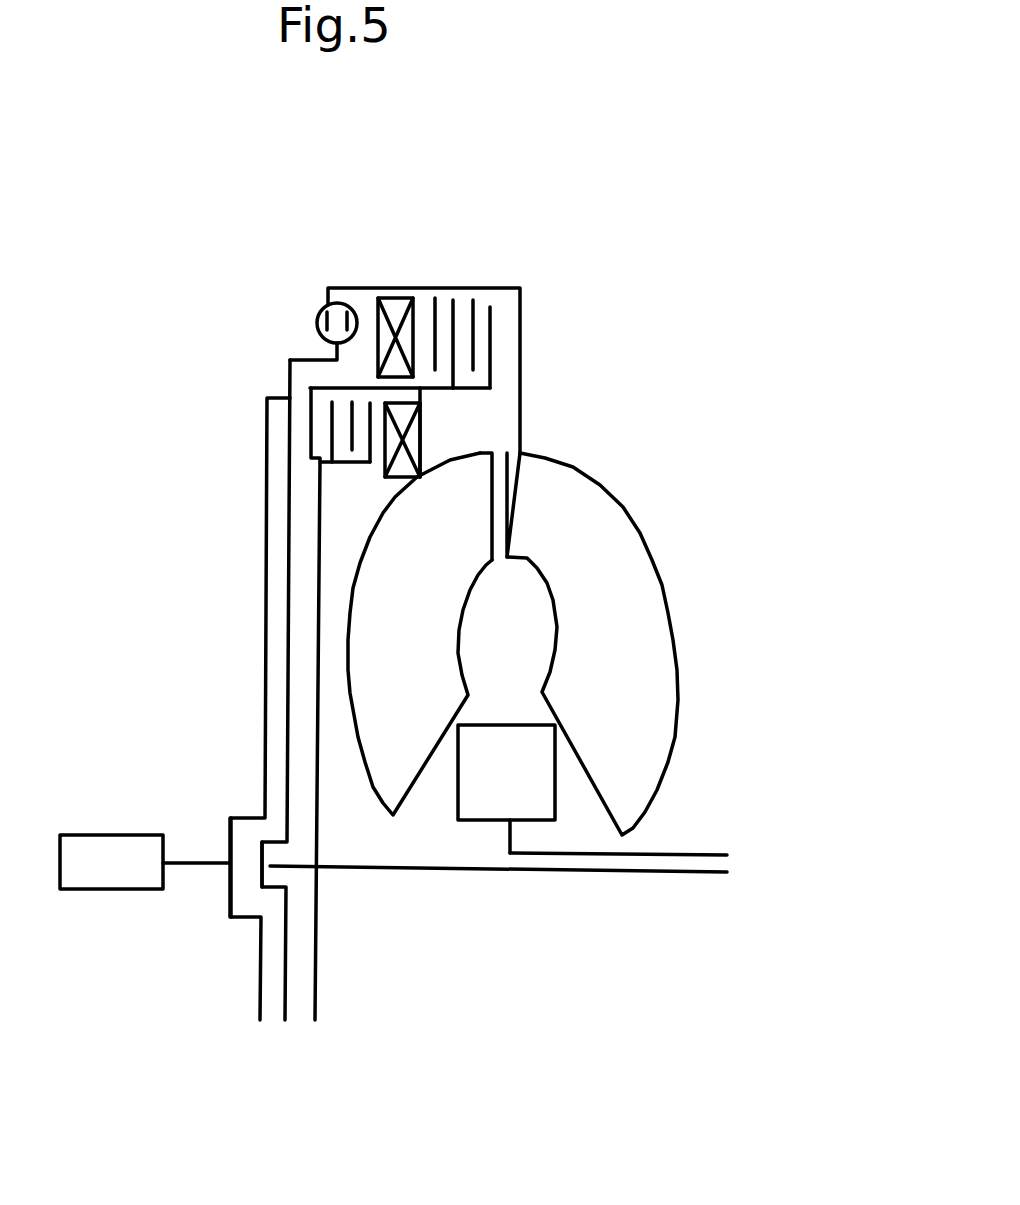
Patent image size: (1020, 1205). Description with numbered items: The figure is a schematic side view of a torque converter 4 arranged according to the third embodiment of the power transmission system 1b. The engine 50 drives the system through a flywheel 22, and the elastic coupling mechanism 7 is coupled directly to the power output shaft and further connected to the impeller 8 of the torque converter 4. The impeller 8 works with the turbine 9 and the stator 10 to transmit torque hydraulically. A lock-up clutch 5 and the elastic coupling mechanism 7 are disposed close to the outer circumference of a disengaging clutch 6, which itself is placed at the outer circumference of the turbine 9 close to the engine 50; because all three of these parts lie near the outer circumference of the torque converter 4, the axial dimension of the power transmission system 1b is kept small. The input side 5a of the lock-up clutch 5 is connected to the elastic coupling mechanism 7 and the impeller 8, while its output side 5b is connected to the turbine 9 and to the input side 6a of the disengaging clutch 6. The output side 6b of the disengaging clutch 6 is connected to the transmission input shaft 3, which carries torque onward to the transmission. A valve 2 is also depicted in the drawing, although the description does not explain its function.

The power transmission system 1b is at (710, 336).
The valve 2 is at (207, 862).
The transmission input shaft 3 is at (670, 873).
The torque converter 4 is at (502, 642).
The lock-up clutch 5 is at (507, 325).
The input side of the lock-up clutch 5a is at (429, 300).
The output side of the lock-up clutch 5b is at (463, 393).
The disengaging clutch 6 is at (298, 453).
The input side of the disengaging clutch 6a is at (365, 390).
The output side of the disengaging clutch 6b is at (320, 528).
The elastic coupling mechanism 7 is at (292, 298).
The impeller 8 is at (575, 527).
The turbine 9 is at (383, 610).
The stator 10 is at (527, 773).
The flywheel 22 is at (262, 723).
The engine 50 is at (118, 889).